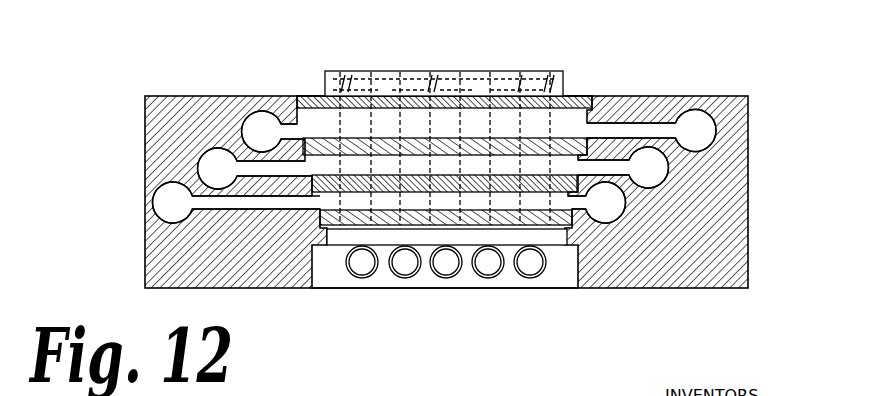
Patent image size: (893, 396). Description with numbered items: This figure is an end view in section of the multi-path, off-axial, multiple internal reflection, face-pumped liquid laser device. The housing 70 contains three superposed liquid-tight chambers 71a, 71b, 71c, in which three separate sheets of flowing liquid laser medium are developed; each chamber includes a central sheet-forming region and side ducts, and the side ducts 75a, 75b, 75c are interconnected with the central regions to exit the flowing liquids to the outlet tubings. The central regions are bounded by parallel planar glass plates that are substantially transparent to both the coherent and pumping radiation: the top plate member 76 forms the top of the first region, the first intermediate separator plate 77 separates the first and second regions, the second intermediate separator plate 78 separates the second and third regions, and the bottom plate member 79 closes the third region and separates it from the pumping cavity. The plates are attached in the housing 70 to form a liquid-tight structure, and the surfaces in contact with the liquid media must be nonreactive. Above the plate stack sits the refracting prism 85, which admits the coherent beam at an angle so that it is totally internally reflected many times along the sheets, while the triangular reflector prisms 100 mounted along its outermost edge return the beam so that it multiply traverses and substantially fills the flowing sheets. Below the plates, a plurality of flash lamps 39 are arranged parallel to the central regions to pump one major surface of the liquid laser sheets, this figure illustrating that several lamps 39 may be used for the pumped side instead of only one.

The housing 70 is at (798, 291).
The liquid-tight chamber 71a is at (707, 129).
The liquid-tight chamber 71b is at (667, 178).
The liquid-tight chamber 71c is at (622, 210).
The side duct 75a is at (244, 128).
The side duct 75b is at (201, 167).
The side duct 75c is at (160, 207).
The top plate member 76 is at (567, 96).
The first intermediate separator plate 77 is at (563, 137).
The second intermediate separator plate 78 is at (483, 177).
The bottom plate member 79 is at (473, 230).
The refracting prism 85 is at (338, 72).
The triangular reflector prism 100 is at (520, 71).
The flash lamp 39 is at (444, 277).